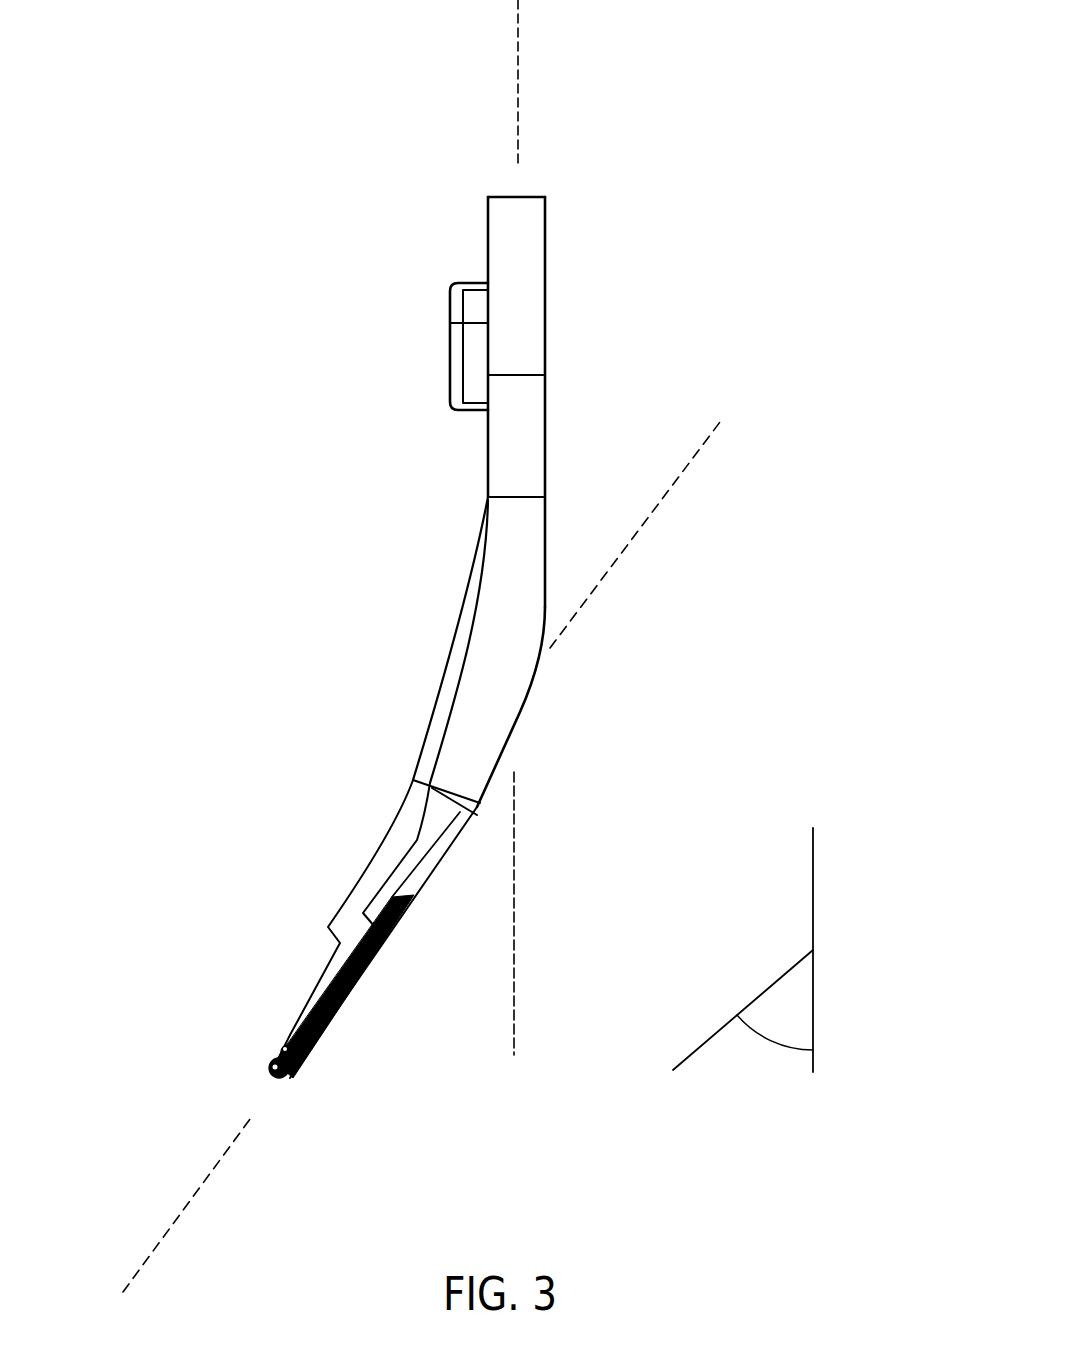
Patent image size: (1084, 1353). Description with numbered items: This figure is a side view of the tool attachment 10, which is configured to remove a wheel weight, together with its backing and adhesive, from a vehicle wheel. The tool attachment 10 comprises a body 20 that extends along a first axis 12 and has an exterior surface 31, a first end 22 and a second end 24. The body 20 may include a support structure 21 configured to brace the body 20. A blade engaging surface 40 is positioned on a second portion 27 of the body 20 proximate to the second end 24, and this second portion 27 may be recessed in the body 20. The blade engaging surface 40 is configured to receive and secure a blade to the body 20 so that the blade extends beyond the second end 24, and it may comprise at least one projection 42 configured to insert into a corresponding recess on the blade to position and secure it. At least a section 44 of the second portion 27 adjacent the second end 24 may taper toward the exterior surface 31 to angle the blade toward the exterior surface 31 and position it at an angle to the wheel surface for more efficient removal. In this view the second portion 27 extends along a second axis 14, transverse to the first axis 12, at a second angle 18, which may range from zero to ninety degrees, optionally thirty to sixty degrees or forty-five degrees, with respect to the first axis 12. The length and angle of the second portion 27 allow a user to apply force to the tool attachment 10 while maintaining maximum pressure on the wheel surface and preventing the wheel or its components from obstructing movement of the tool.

The tool attachment 10 is at (255, 265).
The first axis 12 is at (520, 122).
The second axis 14 is at (162, 1241).
The second angle 18 is at (775, 1055).
The body 20 is at (513, 535).
The support structure 21 is at (465, 618).
The first end 22 is at (518, 196).
The second end 24 is at (283, 1088).
The second portion 27 is at (268, 885).
The exterior surface 31 is at (520, 712).
The blade engaging surface 40 is at (290, 1035).
The projection 42 is at (262, 1063).
The section 44 is at (278, 1008).